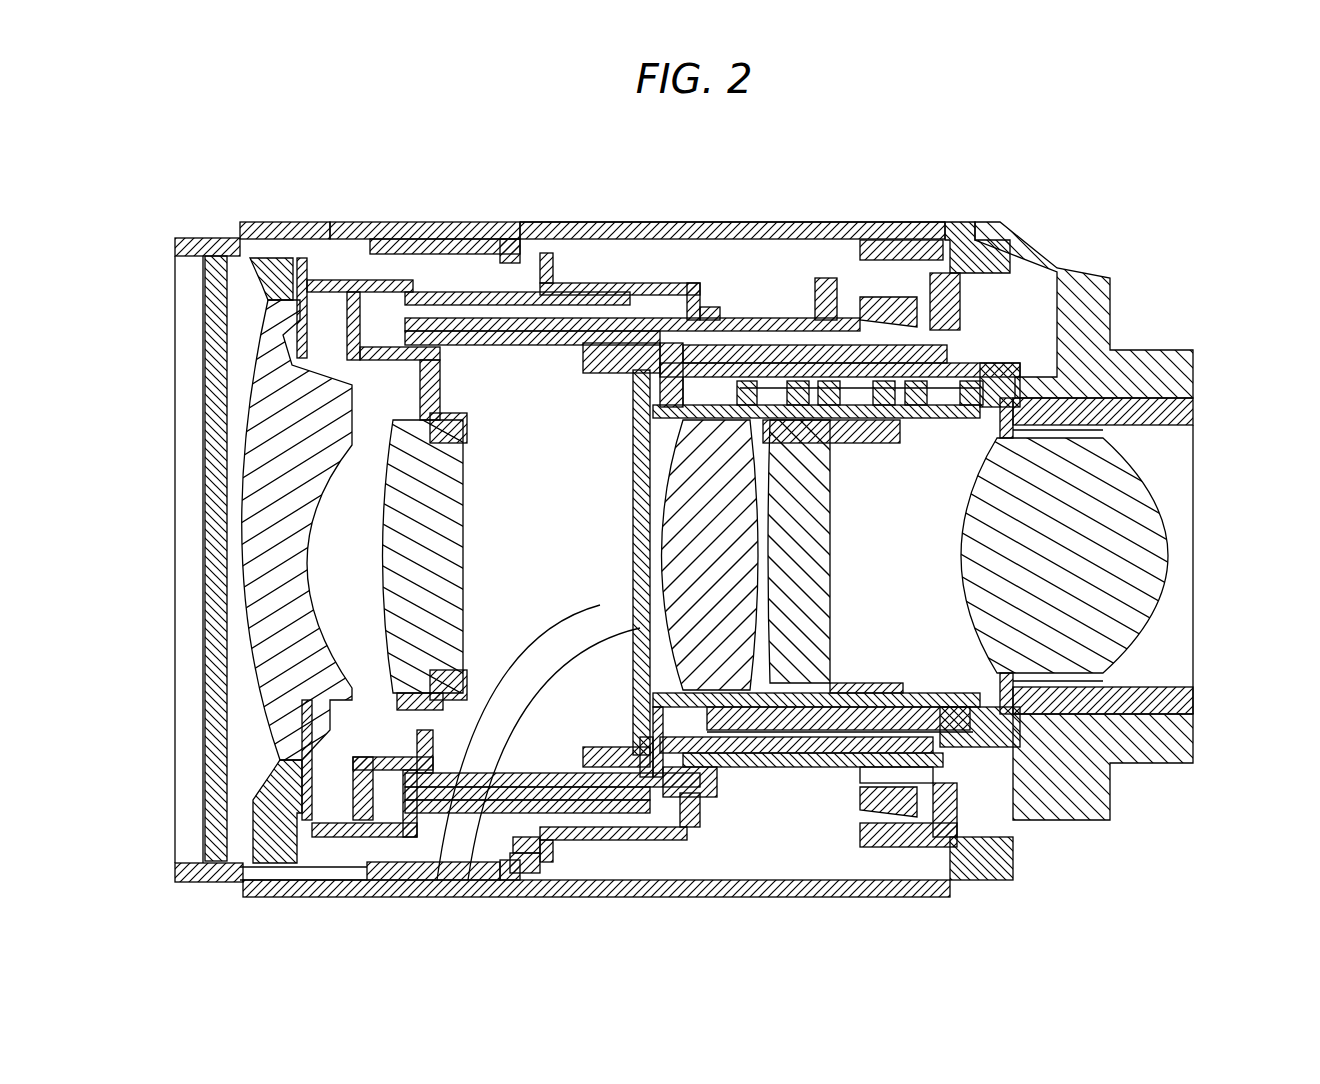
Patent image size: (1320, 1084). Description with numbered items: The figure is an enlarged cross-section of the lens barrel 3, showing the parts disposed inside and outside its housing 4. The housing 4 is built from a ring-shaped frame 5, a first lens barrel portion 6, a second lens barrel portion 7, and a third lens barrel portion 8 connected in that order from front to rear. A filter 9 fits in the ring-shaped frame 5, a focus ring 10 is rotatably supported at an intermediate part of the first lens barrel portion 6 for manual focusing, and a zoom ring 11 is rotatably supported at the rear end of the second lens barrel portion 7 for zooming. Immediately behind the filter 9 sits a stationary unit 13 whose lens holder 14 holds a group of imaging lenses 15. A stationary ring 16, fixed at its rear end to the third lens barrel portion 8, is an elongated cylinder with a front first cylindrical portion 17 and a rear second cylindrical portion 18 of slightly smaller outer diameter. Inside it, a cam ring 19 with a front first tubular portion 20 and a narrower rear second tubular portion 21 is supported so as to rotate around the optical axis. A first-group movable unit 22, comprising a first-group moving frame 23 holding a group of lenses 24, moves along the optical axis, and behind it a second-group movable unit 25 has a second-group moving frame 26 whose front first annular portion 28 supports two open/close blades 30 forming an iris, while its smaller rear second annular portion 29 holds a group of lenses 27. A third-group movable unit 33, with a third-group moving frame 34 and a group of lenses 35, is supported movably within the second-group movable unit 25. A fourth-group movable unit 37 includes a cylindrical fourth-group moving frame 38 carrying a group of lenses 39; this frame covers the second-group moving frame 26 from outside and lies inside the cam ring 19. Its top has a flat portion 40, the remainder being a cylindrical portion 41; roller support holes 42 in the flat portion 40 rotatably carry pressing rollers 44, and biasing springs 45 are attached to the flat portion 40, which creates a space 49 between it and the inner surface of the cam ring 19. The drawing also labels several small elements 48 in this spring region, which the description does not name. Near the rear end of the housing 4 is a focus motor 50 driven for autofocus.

The lens barrel 3 is at (1202, 206).
The housing 4 is at (597, 222).
The ring-shaped frame 5 is at (185, 238).
The first lens barrel portion 6 is at (330, 245).
The second lens barrel portion 7 is at (630, 235).
The third lens barrel portion 8 is at (1000, 225).
The filter 9 is at (205, 485).
The focus ring 10 is at (470, 237).
The zoom ring 11 is at (786, 395).
The stationary unit 13 is at (272, 256).
The lens holder 14 is at (287, 262).
The group of imaging lenses 15 is at (252, 435).
The stationary ring 16 is at (1060, 322).
The first cylindrical portion 17 is at (655, 300).
The second cylindrical portion 18 is at (752, 395).
The cam ring 19 is at (494, 329).
The first tubular portion 20 is at (545, 240).
The second tubular portion 21 is at (756, 400).
The first-group movable unit 22 is at (350, 298).
The first-group moving frame 23 is at (408, 310).
The group of lenses 24 is at (450, 310).
The second-group movable unit 25 is at (590, 785).
The second-group moving frame 26 is at (607, 775).
The group of lenses 27 is at (730, 700).
The first annular portion 28 is at (515, 800).
The second annular portion 29 is at (755, 640).
The open/close blades 30 is at (437, 900).
The third-group movable unit 33 is at (805, 690).
The third-group moving frame 34 is at (795, 708).
The group of lenses 35 is at (990, 850).
The fourth-group movable unit 37 is at (1198, 700).
The fourth-group moving frame 38 is at (1195, 405).
The group of lenses 39 is at (1168, 580).
The flat portion 40 is at (873, 300).
The cylindrical portion 41 is at (1015, 815).
The roller support holes 42 is at (735, 380).
The pressing rollers 44 is at (742, 385).
The biasing springs 45 is at (802, 395).
The fastening screw 48 is at (822, 390).
The space 49 is at (658, 398).
The focus motor 50 is at (893, 805).